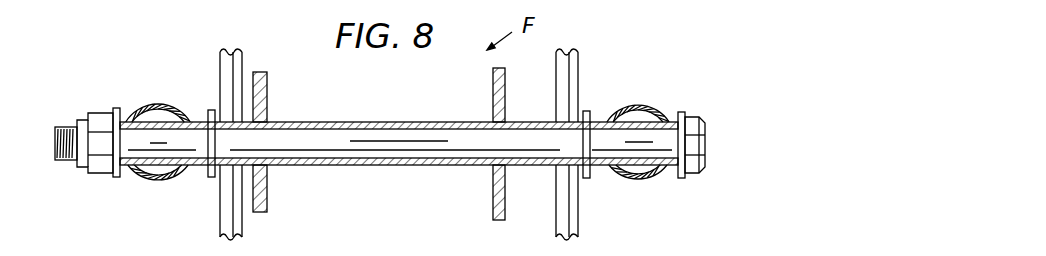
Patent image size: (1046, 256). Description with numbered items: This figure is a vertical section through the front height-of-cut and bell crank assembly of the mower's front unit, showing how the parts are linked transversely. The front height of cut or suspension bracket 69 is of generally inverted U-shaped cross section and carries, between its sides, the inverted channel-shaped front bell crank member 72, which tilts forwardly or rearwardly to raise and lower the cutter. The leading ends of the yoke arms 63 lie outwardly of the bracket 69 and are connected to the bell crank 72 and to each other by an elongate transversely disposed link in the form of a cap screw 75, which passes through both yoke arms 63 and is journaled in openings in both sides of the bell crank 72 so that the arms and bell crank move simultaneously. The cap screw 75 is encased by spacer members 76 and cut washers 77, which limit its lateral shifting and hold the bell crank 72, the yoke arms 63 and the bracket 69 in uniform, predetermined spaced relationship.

The yoke arms 63 is at (157, 104).
The front height of cut or suspension bracket 69 is at (220, 66).
The front bell crank member 72 is at (267, 193).
The cap screw 75 is at (425, 146).
The spacer members 76 is at (364, 122).
The cut washers 77 is at (209, 113).